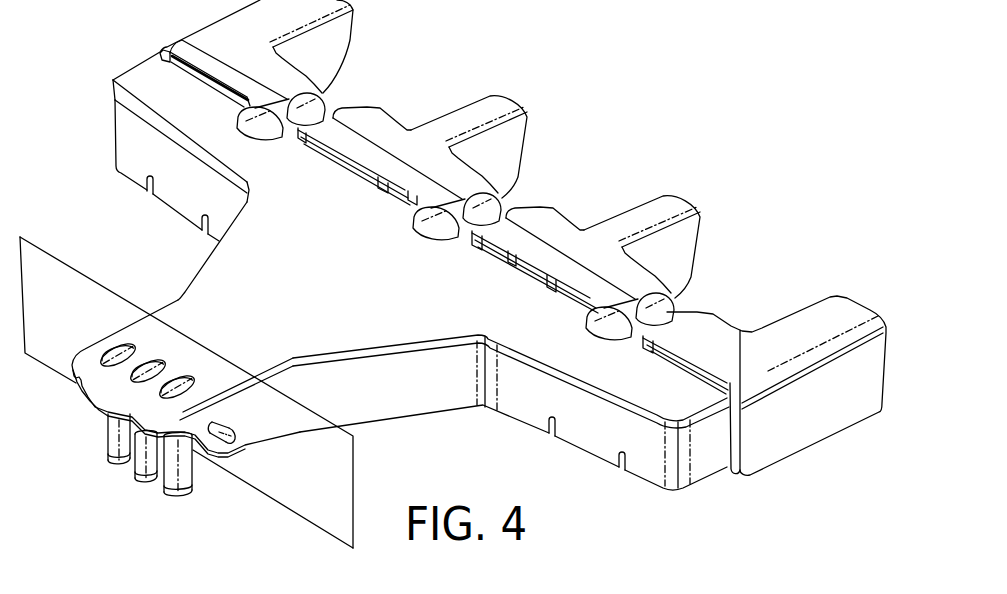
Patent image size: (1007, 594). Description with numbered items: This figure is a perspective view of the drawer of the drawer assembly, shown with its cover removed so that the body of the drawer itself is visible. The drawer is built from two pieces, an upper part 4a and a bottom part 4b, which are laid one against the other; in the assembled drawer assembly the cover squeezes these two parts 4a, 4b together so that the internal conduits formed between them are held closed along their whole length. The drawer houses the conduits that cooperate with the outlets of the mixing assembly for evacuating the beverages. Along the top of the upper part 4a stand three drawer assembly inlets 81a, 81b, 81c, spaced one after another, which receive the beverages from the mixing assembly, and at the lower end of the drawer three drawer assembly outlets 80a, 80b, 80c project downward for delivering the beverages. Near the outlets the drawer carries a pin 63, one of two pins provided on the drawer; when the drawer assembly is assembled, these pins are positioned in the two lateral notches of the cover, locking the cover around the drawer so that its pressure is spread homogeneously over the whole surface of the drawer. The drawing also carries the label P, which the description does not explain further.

The upper part 4a is at (180, 317).
The bottom part 4b is at (425, 402).
The pin 63 is at (234, 441).
The drawer assembly outlet 80a is at (118, 466).
The drawer assembly outlet 80b is at (148, 487).
The drawer assembly outlet 80c is at (180, 499).
The drawer assembly inlet 81a is at (324, 108).
The drawer assembly inlet 81b is at (500, 208).
The drawer assembly inlet 81c is at (675, 310).
The reference plane P is at (186, 392).